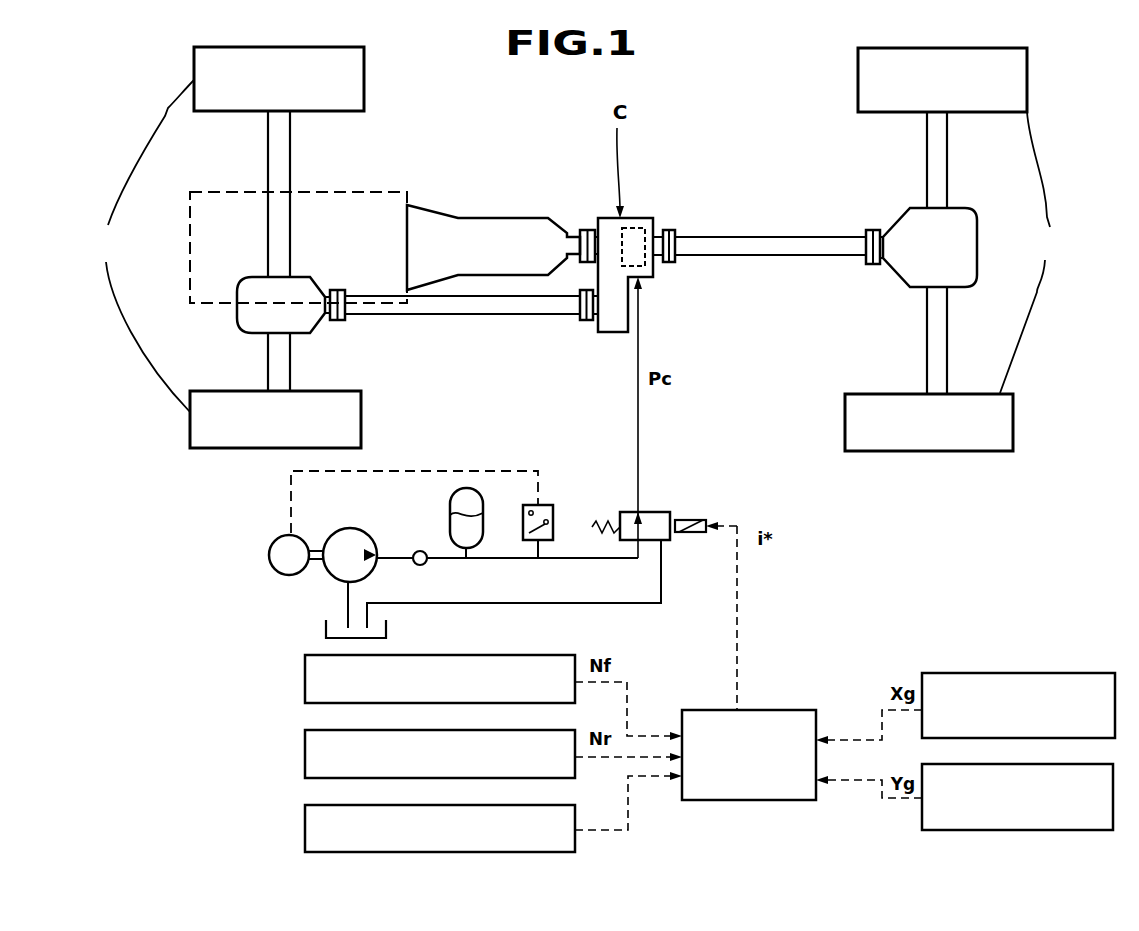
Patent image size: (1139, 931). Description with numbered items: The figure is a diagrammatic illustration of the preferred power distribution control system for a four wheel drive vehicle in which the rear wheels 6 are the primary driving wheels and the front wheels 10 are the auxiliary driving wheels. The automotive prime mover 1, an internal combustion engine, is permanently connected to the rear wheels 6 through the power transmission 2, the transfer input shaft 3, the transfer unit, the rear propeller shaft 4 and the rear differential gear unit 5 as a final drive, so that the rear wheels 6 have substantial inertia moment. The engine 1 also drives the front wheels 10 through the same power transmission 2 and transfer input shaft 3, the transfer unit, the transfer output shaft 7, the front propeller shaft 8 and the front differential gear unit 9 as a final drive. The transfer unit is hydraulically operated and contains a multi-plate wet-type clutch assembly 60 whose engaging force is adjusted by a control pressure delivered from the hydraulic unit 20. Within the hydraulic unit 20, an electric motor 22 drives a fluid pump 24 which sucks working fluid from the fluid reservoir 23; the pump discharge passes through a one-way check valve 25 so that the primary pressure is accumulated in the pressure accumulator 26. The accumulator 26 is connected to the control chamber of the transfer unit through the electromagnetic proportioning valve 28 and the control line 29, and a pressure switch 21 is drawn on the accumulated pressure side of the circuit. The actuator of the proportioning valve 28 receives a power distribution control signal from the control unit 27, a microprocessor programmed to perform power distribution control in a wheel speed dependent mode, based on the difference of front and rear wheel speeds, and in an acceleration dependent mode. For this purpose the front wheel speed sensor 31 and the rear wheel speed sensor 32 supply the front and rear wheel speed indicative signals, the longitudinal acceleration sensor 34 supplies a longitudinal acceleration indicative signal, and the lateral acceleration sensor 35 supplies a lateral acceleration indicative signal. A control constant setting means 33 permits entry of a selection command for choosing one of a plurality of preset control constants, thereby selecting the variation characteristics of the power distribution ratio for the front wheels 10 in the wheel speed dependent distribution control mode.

The automotive prime mover 1 is at (388, 192).
The power transmission 2 is at (480, 218).
The transfer input shaft 3 is at (593, 222).
The rear propeller shaft 4 is at (768, 237).
The rear differential gear unit 5 is at (977, 215).
The rear wheels 6 is at (952, 249).
The transfer output shaft 7 is at (593, 322).
The front propeller shaft 8 is at (472, 318).
The front differential gear unit 9 is at (240, 327).
The front wheels 10 is at (229, 247).
The hydraulic unit 20 is at (774, 495).
The pressure switch 21 is at (550, 505).
The electric motor 22 is at (298, 535).
The fluid reservoir 23 is at (388, 626).
The fluid pump 24 is at (355, 528).
The one-way check valve 25 is at (420, 551).
The pressure accumulator 26 is at (484, 522).
The control unit 27 is at (778, 710).
The electromagnetic proportioning valve 28 is at (620, 512).
The control line 29 is at (638, 355).
The front wheel speed sensor 31 is at (305, 692).
The rear wheel speed sensor 32 is at (305, 766).
The control constant setting means 33 is at (305, 842).
The longitudinal acceleration sensor 34 is at (990, 673).
The lateral acceleration sensor 35 is at (990, 830).
The multi-plate wet-type clutch assembly 60 is at (642, 228).